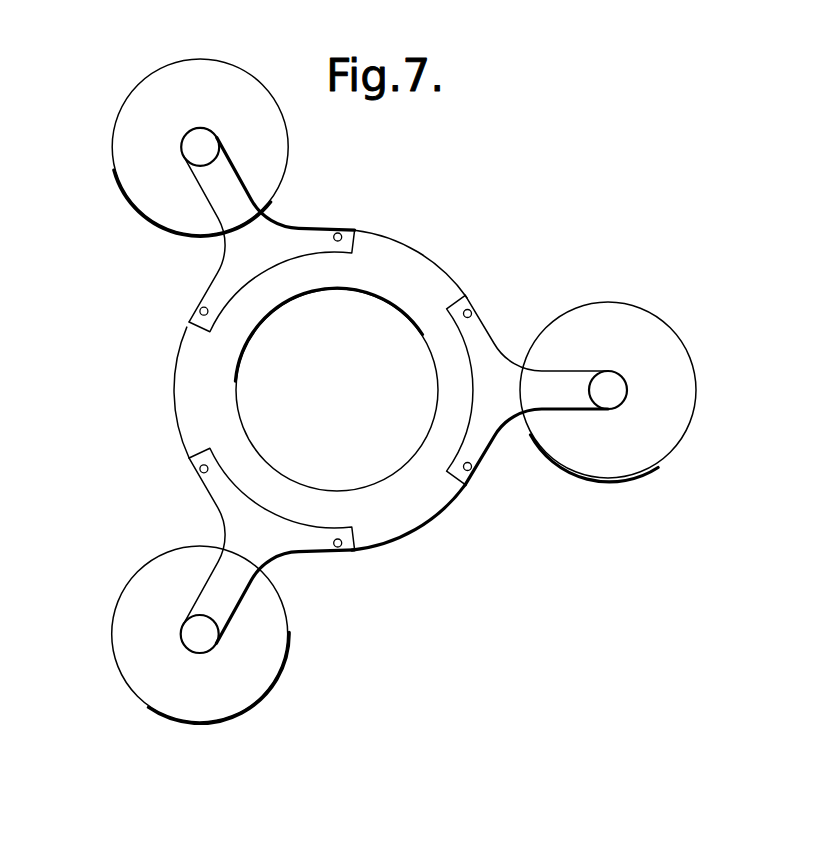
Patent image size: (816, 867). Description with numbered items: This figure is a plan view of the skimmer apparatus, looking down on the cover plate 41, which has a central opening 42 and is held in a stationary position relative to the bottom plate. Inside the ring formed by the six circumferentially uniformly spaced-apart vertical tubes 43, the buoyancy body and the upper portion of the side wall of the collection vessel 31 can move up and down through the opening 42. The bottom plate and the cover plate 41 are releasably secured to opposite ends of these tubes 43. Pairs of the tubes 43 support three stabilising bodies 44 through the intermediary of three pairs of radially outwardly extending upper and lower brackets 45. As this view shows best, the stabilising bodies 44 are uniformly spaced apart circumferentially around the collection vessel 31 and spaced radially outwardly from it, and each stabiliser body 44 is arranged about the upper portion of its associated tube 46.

The collection vessel 31 is at (333, 371).
The cover plate 41 is at (409, 544).
The opening 42 is at (336, 389).
The vertical tubes 43 is at (330, 390).
The stabilising bodies 44 is at (360, 391).
The brackets 45 is at (358, 400).
The tube 46 is at (358, 414).